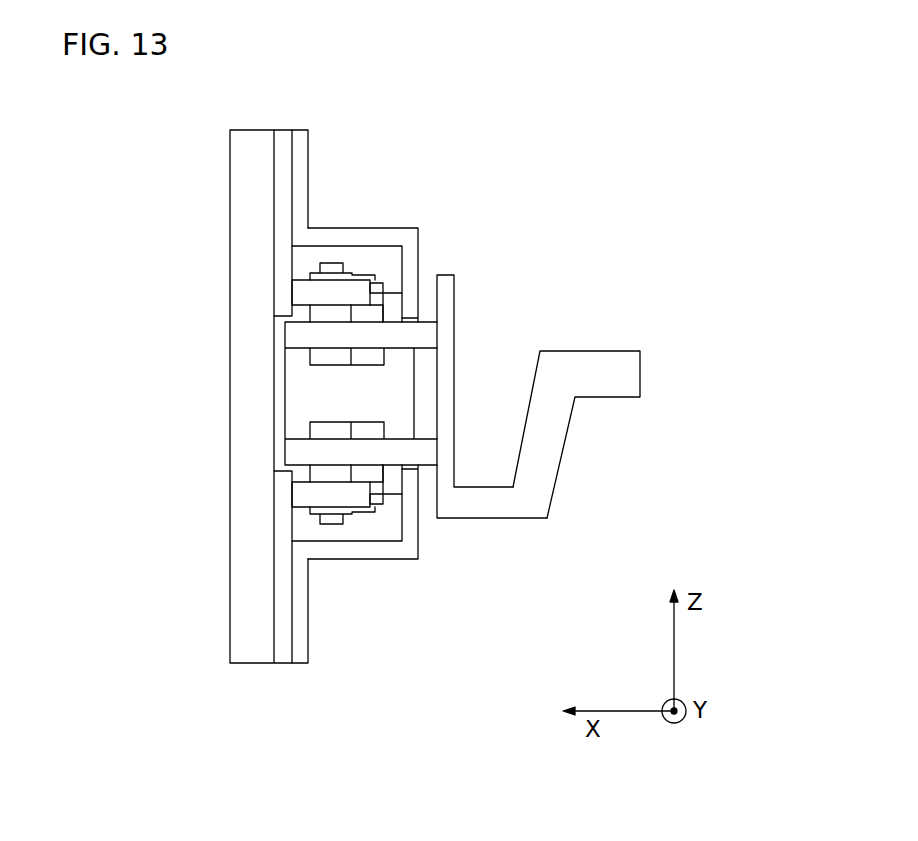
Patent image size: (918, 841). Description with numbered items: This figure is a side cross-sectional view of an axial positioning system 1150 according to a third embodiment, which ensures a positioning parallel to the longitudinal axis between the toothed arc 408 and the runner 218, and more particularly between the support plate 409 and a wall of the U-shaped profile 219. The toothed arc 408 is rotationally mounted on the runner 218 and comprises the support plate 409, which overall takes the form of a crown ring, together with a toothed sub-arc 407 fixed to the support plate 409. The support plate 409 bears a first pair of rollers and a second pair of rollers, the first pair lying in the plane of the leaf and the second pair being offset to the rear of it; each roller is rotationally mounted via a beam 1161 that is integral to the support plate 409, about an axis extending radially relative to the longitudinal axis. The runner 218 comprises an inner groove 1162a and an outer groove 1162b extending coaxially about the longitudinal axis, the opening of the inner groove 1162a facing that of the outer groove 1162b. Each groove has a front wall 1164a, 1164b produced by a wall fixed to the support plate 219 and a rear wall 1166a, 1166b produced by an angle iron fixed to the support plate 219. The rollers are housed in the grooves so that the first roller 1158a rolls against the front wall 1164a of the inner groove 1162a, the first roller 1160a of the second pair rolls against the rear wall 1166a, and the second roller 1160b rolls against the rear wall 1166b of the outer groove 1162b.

The runner 218 is at (197, 230).
The support plate of the U-shaped profile 219 is at (233, 157).
The axial positioning system 1150 is at (575, 170).
The first roller of the first pair 1158a is at (323, 293).
The first roller of the second pair 1160a is at (388, 487).
The second roller of the second pair 1160b is at (390, 302).
The beam 1161 is at (300, 455).
The inner groove 1162a is at (303, 525).
The outer groove 1162b is at (302, 263).
The front wall of the inner groove 1164a is at (283, 500).
The front wall of the outer groove 1164b is at (282, 297).
The rear wall of the inner groove 1166a is at (412, 485).
The rear wall of the outer groove 1166b is at (410, 298).
The toothed sub-arc 407 is at (630, 358).
The toothed arc 408 is at (608, 307).
The support plate 409 is at (447, 348).